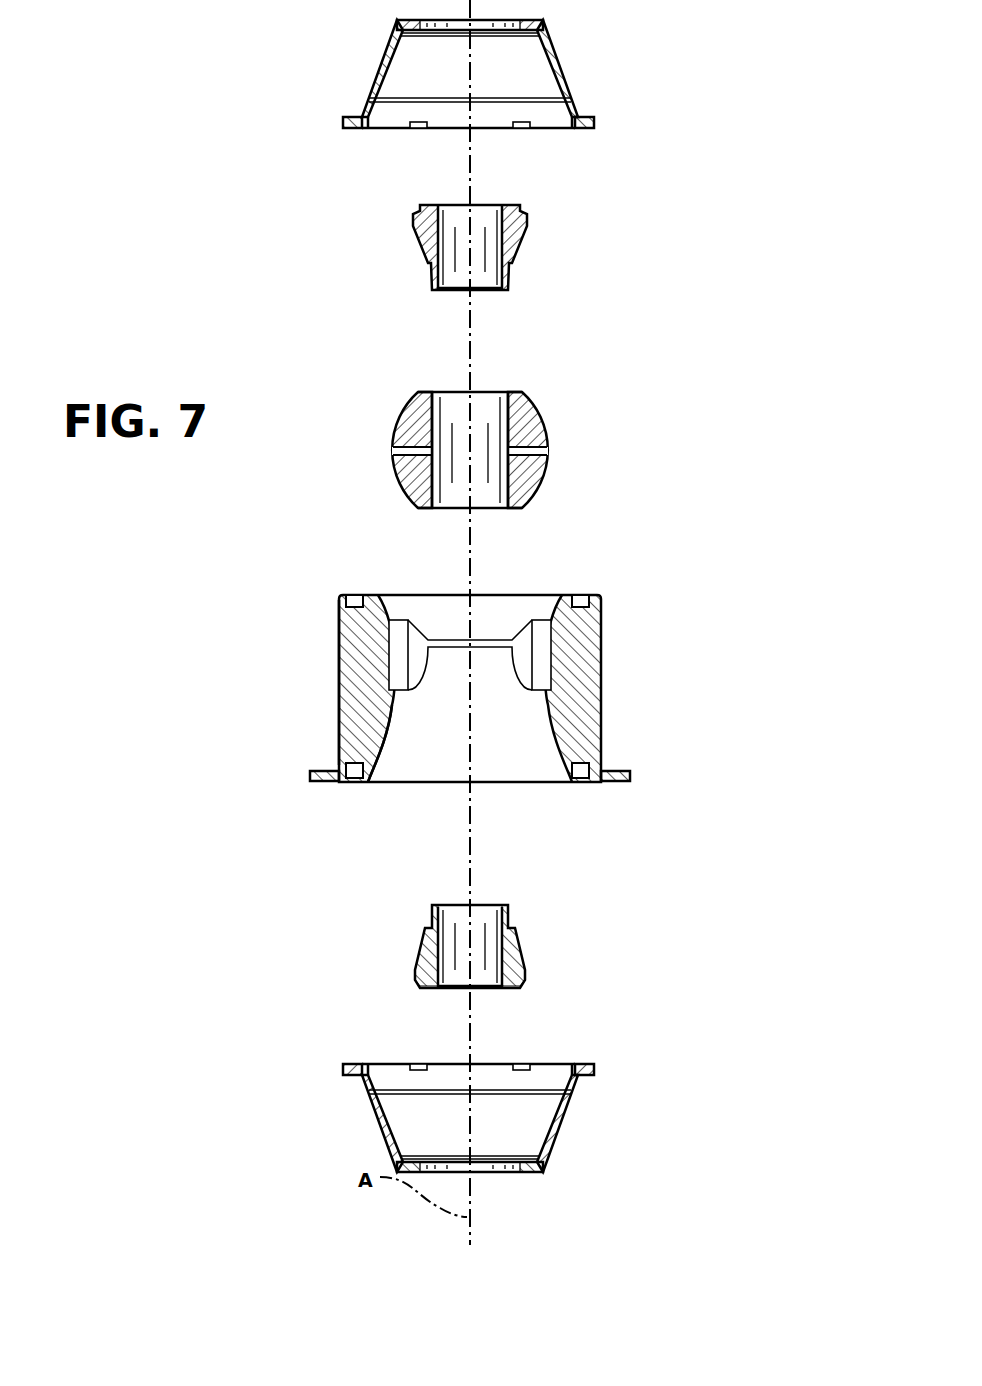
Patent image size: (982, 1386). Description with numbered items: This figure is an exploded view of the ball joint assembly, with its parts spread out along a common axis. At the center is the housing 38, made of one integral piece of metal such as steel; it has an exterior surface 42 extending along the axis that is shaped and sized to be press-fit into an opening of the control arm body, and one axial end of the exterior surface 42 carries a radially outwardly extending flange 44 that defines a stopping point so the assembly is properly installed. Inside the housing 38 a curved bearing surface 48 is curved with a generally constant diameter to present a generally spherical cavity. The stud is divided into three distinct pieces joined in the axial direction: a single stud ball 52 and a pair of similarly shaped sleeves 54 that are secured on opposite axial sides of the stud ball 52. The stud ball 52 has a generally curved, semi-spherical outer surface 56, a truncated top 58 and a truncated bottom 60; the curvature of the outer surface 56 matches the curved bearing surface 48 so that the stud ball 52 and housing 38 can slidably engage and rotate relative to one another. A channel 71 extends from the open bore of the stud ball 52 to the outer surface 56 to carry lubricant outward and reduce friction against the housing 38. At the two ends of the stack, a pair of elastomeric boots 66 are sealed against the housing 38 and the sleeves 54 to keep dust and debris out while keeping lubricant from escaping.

The housing 38 is at (598, 677).
The exterior surface 42 is at (338, 693).
The flange 44 is at (322, 775).
The curved bearing surface 48 is at (395, 722).
The stud ball 52 is at (548, 432).
The sleeves 54 is at (522, 240).
The outer surface 56 is at (540, 478).
The truncated top 58 is at (494, 392).
The truncated bottom 60 is at (450, 508).
The boot 66 is at (553, 52).
The channel 71 is at (392, 452).